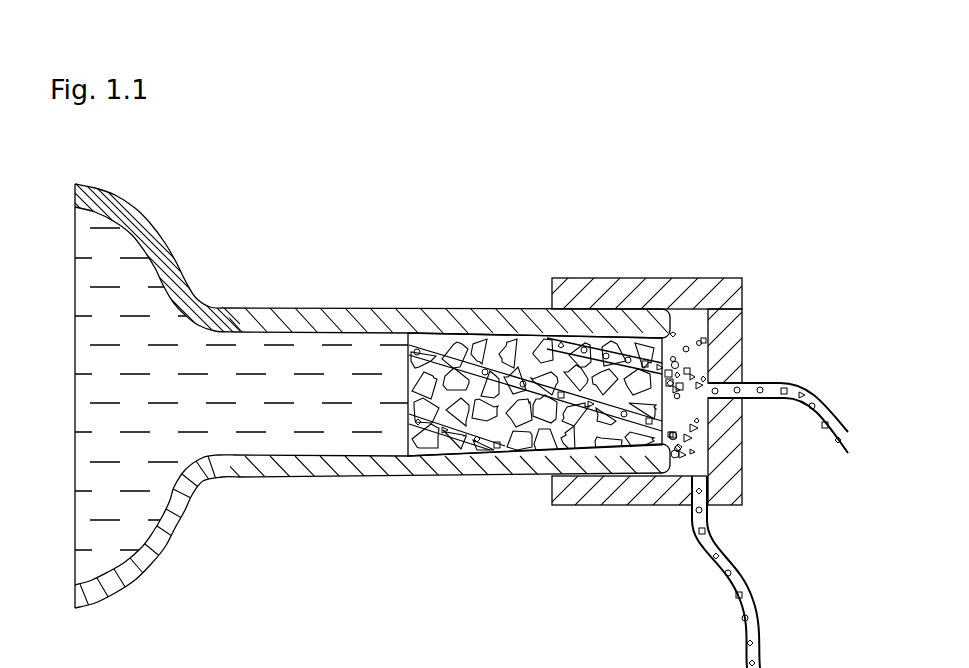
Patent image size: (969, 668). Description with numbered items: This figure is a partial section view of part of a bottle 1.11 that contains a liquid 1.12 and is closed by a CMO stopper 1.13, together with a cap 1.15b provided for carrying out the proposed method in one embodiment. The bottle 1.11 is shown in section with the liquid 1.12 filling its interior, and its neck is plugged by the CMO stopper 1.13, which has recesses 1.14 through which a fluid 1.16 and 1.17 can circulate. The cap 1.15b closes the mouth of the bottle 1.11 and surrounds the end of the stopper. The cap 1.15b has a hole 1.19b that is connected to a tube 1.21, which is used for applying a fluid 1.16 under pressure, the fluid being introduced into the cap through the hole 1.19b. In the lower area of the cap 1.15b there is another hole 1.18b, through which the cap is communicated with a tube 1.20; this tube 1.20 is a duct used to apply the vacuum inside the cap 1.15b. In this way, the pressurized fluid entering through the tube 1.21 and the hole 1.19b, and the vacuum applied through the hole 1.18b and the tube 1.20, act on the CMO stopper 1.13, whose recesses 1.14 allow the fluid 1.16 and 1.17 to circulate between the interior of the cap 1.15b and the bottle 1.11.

The bottle 1.11 is at (238, 305).
The liquid 1.12 is at (188, 438).
The CMO stopper 1.13 is at (532, 392).
The recesses 1.14 is at (487, 450).
The cap 1.15b is at (679, 288).
The fluid 1.16 is at (509, 354).
The fluid 1.17 is at (544, 405).
The hole 1.18b is at (686, 480).
The hole 1.19b is at (718, 414).
The tube 1.20 is at (685, 572).
The tube 1.21 is at (755, 380).